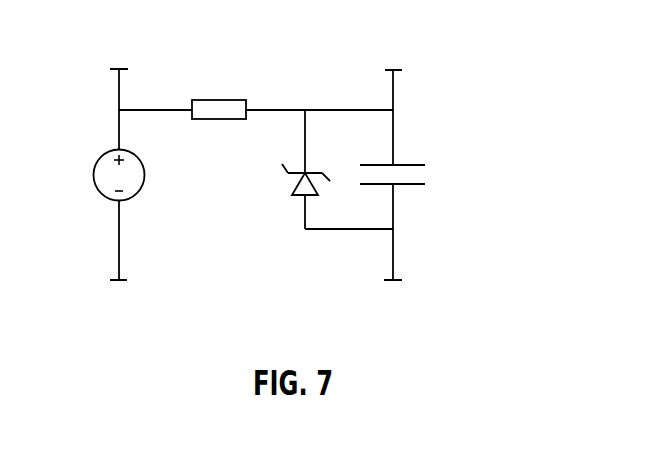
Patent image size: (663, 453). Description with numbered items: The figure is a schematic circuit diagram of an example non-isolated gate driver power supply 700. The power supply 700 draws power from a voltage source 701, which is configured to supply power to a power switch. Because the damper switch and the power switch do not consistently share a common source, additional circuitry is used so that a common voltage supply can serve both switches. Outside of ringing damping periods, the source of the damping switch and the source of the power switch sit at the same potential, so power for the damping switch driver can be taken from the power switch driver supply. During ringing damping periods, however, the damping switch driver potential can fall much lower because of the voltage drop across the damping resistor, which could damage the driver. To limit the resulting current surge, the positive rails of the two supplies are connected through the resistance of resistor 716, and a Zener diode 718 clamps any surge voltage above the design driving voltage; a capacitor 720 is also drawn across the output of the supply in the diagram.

The non-isolated gate driver power supply 700 is at (463, 33).
The voltage source 701 is at (94, 180).
The resistor 716 is at (212, 119).
The Zener diode 718 is at (294, 197).
The capacitor 720 is at (410, 165).